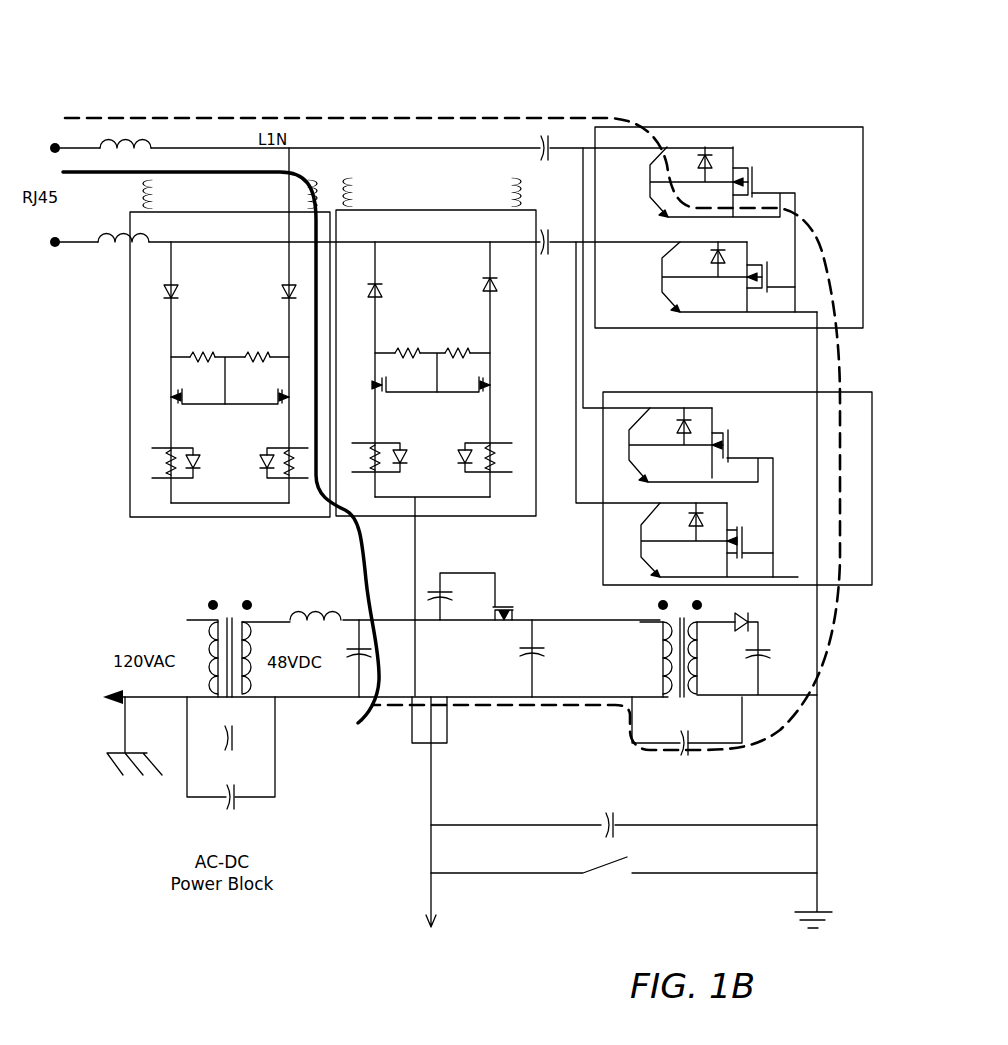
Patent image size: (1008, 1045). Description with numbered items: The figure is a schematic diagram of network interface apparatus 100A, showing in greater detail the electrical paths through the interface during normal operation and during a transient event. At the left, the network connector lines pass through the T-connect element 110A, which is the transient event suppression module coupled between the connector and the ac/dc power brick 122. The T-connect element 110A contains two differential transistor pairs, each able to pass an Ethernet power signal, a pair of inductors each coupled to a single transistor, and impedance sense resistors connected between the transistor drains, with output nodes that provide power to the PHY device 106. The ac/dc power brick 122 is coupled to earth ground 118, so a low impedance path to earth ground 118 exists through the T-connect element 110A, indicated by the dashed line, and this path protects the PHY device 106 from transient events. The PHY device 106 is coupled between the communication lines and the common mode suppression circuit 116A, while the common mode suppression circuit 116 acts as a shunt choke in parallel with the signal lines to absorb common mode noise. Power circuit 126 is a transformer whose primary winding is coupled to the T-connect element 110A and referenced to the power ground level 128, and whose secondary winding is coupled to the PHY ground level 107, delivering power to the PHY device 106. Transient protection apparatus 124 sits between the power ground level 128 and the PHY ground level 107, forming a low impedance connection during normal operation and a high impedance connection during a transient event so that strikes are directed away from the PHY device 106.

The network interface apparatus 100A is at (112, 72).
The PHY device 106 is at (832, 127).
The common mode suppression circuit 116A is at (410, 210).
The T-connect element 110A is at (125, 332).
The common mode suppression circuit 116 is at (852, 392).
The ac/dc power brick 122 is at (228, 605).
The earth ground 118 is at (102, 768).
The power circuit 126 is at (682, 700).
The transient protection apparatus 124 is at (616, 882).
The PHY ground level 107 is at (830, 903).
The power ground level 128 is at (418, 922).